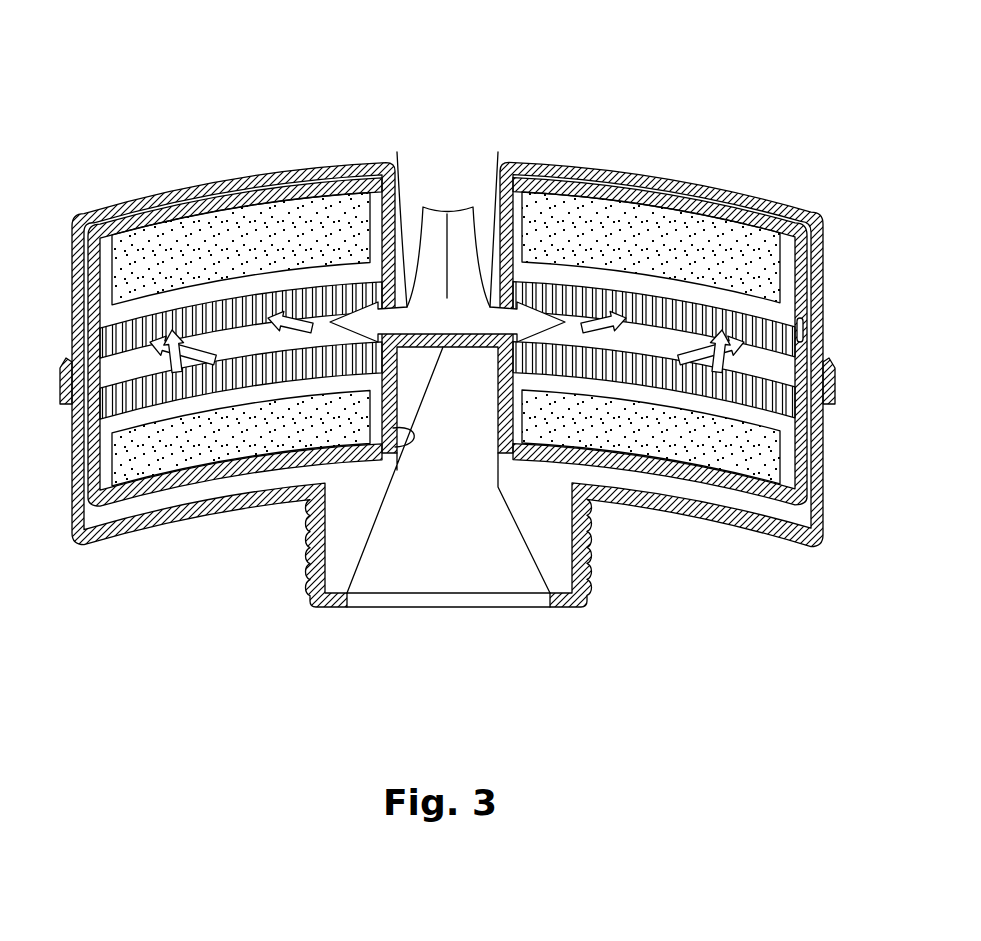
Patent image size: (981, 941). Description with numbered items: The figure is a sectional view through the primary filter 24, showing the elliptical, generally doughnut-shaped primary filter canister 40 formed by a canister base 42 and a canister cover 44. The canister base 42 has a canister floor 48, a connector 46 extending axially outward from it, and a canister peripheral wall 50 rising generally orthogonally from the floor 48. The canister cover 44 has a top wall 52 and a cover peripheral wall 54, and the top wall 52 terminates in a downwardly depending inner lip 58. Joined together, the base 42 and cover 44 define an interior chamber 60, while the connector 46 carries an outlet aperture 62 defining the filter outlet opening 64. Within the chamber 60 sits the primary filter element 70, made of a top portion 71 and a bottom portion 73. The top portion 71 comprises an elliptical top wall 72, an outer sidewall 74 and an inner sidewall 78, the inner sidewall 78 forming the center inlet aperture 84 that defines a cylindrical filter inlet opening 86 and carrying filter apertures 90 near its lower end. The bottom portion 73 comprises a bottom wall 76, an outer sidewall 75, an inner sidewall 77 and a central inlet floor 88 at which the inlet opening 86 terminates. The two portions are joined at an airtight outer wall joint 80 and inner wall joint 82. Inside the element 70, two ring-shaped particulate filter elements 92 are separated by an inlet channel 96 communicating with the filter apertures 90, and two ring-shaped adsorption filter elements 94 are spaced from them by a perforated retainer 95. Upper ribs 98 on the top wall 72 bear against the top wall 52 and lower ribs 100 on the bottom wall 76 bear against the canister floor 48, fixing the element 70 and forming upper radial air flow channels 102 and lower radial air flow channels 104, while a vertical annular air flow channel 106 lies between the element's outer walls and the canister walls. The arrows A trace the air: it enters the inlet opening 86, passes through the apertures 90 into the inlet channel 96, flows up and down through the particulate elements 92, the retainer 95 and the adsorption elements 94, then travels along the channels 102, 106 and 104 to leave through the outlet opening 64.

The primary filter 24 is at (190, 56).
The primary filter canister 40 is at (676, 160).
The canister base 42 is at (714, 530).
The canister cover 44 is at (612, 163).
The connector 46 is at (310, 580).
The canister floor 48 is at (211, 518).
The canister peripheral wall 50 is at (826, 478).
The top wall 52 is at (558, 190).
The cover peripheral wall 54 is at (767, 322).
The inner lip 58 is at (487, 190).
The interior chamber 60 is at (440, 450).
The outlet aperture 62 is at (541, 607).
The filter outlet opening 64 is at (418, 598).
The primary filter element 70 is at (738, 218).
The top portion 71 is at (812, 282).
The top wall 72 is at (688, 200).
The bottom portion 73 is at (812, 507).
The outer sidewall 74 is at (811, 257).
The outer sidewall 75 is at (828, 387).
The bottom wall 76 is at (692, 490).
The inner sidewall 77 is at (393, 445).
The inner sidewall 78 is at (398, 185).
The outer wall joint 80 is at (800, 317).
The inner wall joint 82 is at (513, 345).
The center inlet aperture 84 is at (413, 188).
The filter inlet opening 86 is at (430, 198).
The inlet floor 88 is at (467, 345).
The filter apertures 90 is at (497, 305).
The particulate filter elements 92 is at (805, 322).
The adsorption filter elements 94 is at (770, 323).
The perforated retainer 95 is at (525, 268).
The inlet channel 96 is at (777, 370).
The upper ribs 98 is at (590, 185).
The lower ribs 100 is at (803, 557).
The upper radial air flow channels 102 is at (622, 186).
The lower radial air flow channels 104 is at (728, 507).
The vertical annular air flow channel 106 is at (811, 443).
The air flow arrows A is at (380, 332).